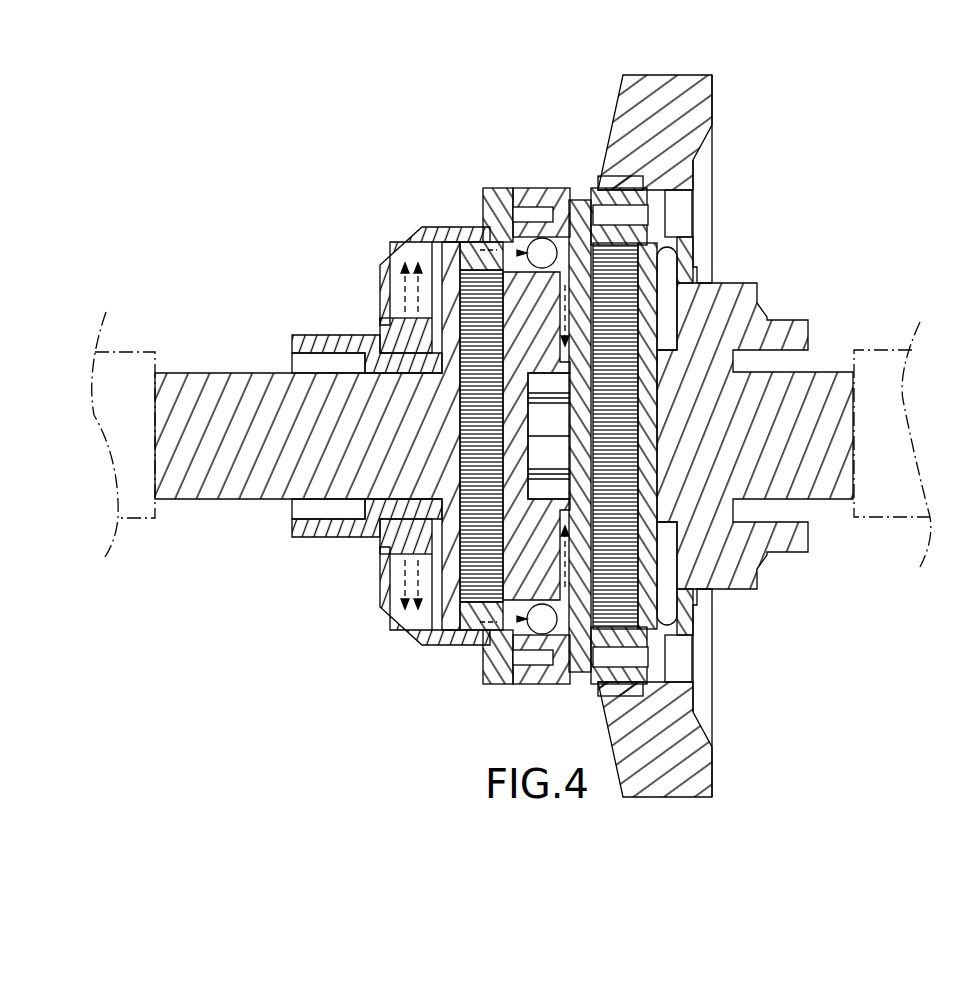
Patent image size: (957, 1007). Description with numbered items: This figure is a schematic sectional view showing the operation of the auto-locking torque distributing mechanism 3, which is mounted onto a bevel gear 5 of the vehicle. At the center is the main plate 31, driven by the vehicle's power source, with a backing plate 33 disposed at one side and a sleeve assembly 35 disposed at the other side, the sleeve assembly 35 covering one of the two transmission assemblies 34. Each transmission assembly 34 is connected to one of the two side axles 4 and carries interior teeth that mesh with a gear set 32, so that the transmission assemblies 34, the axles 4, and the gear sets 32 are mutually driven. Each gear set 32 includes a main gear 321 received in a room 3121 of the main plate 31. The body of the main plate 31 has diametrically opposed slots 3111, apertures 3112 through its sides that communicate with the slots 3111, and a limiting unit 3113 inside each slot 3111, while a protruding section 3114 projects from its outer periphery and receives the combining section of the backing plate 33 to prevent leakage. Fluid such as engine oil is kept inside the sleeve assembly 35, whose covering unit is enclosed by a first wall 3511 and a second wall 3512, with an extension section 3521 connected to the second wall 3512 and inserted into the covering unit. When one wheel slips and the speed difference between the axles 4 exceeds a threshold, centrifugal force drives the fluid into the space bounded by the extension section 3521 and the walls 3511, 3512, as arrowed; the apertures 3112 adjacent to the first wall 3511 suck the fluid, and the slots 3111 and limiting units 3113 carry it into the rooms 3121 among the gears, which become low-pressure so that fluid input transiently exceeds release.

The auto-locking torque distributing mechanism 3 is at (102, 253).
The side axle 4 is at (250, 490).
The bevel gear 5 is at (697, 83).
The main plate 31 is at (547, 178).
The slot 3111 is at (567, 284).
The aperture 3112 is at (518, 251).
The limiting unit 3113 is at (556, 252).
The protruding section 3114 is at (580, 186).
The gear set 32 is at (732, 457).
The main gear 321 is at (593, 340).
The room 3121 is at (692, 598).
The backing plate 33 is at (616, 175).
The transmission assembly 34 is at (455, 245).
The sleeve assembly 35 is at (334, 374).
The first wall 3511 is at (470, 262).
The second wall 3512 is at (393, 300).
The extension section 3521 is at (295, 338).